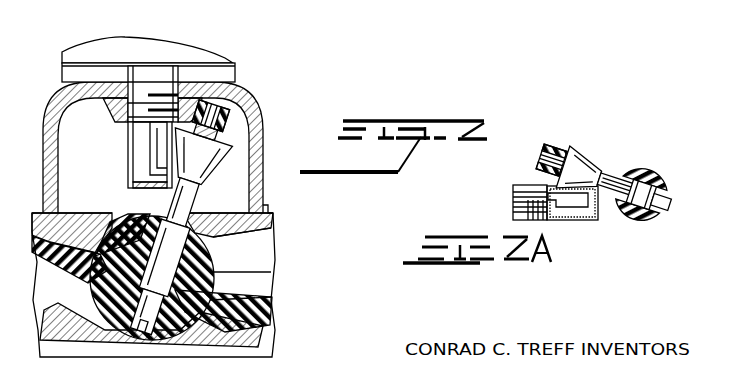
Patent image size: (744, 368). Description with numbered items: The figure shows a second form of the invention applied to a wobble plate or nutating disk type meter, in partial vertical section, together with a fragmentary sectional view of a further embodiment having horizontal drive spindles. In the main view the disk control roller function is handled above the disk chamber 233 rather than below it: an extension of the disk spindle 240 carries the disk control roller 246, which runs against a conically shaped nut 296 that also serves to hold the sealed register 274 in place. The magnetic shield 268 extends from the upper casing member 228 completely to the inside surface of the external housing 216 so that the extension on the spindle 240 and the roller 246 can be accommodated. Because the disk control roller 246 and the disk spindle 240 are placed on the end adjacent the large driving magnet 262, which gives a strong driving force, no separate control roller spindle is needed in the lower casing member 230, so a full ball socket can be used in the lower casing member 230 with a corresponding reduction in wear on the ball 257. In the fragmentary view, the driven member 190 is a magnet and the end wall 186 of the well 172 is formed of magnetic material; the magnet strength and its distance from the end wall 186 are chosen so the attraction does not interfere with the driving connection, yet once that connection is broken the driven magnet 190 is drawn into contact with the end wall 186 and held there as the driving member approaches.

In FIG. 2, the sealed register 274 is at (131, 48).
In FIG. 2, the external housing 216 is at (238, 77).
In FIG. 2, the disk control roller 246 is at (228, 118).
In FIG. 2A, the disk control roller 246 is at (551, 146).
In FIG. 2, the magnetic shield 268 is at (263, 133).
In FIG. 2, the conically shaped nut 296 is at (110, 112).
In FIG. 2, the driving magnet 262 is at (207, 175).
In FIG. 2A, the driving magnet 262 is at (580, 166).
In FIG. 2, the disk spindle 240 is at (190, 204).
In FIG. 2A, the disk spindle 240 is at (613, 182).
In FIG. 2, the upper casing member 228 is at (292, 208).
In FIG. 2, the disk chamber 233 is at (264, 262).
In FIG. 2, the ball 257 is at (214, 282).
In FIG. 2A, the ball 257 is at (651, 184).
In FIG. 2, the lower casing member 230 is at (255, 345).
In FIG. 2A, the well 172 is at (561, 222).
In FIG. 2A, the end wall 186 is at (599, 214).
In FIG. 2A, the driven member 190 is at (583, 222).